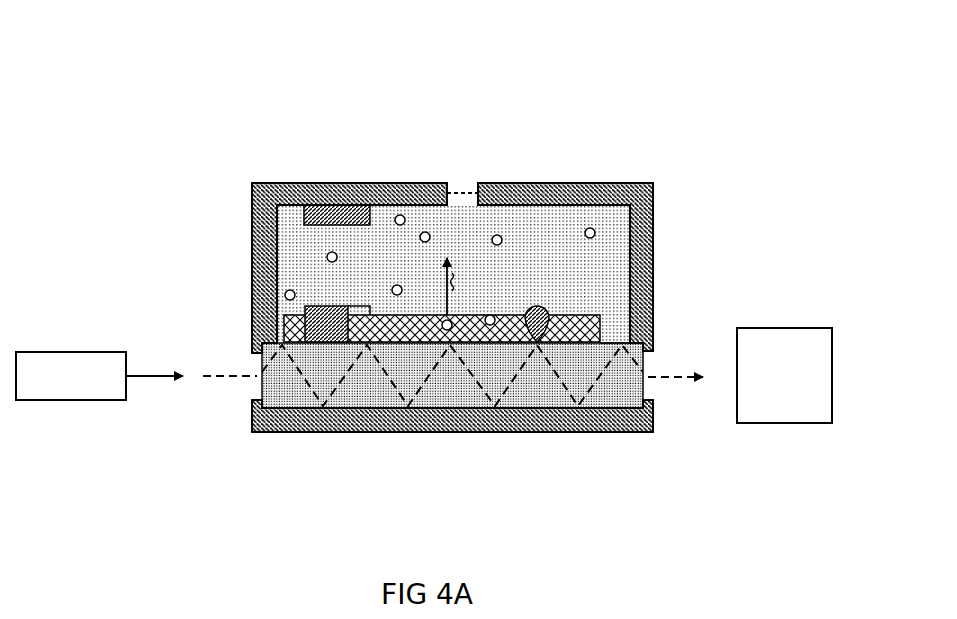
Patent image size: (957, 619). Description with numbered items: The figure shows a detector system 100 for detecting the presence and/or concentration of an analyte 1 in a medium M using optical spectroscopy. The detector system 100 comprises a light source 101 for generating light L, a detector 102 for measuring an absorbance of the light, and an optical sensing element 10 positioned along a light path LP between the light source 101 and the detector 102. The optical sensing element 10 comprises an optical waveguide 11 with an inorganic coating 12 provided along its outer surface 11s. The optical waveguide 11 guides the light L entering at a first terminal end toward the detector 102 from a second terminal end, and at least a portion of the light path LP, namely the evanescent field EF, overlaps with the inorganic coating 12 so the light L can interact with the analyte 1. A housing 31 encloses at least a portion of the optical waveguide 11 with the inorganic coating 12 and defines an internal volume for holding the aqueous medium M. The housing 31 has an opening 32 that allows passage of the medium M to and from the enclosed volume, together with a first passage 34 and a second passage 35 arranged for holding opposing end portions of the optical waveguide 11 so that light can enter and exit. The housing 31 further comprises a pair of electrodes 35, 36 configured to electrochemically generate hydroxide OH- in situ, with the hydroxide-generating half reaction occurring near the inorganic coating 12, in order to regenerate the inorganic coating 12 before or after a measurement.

The detector system 100 is at (107, 110).
The optical sensing element 10 is at (213, 357).
The light source 101 is at (71, 376).
The detector 102 is at (784, 375).
The housing 31 is at (657, 291).
The opening 32 is at (463, 178).
The first passage 34 is at (232, 398).
The second passage 35 is at (348, 227).
The electrode 36 is at (322, 303).
The analyte 1 is at (458, 320).
The inorganic coating 12 is at (580, 313).
The optical waveguide 11 is at (636, 398).
The outer surface 11s is at (622, 340).
The light L is at (154, 361).
The light path LP is at (452, 375).
The medium M is at (553, 215).
The evanescent field EF is at (528, 322).
The hydroxide OH- is at (421, 259).